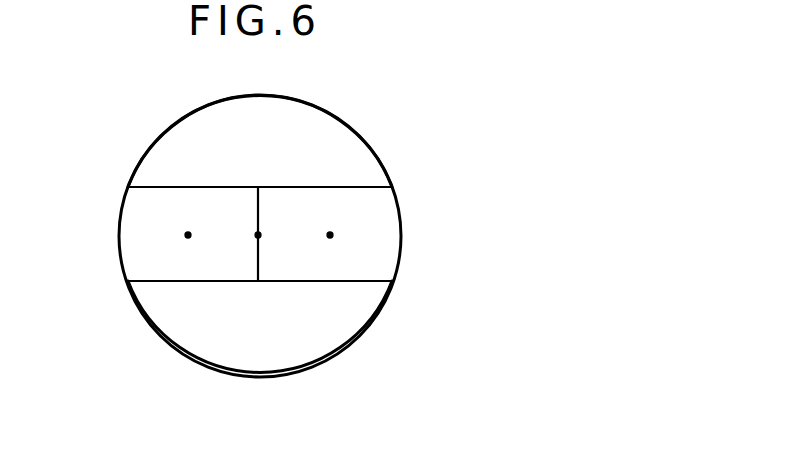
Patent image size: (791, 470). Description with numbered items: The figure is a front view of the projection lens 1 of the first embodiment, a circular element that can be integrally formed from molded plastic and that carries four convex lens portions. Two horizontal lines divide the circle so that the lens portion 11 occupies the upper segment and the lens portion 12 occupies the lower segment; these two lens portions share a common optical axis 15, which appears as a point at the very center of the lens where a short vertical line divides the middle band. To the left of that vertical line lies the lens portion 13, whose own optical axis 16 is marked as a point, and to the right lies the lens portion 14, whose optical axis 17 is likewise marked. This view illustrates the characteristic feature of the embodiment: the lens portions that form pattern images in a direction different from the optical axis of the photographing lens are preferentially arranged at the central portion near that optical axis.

The projection lens 1 is at (283, 97).
The lens portion 11 is at (150, 153).
The lens portion 12 is at (262, 366).
The lens portion 13 is at (130, 218).
The lens portion 14 is at (388, 206).
The optical axis 15 is at (258, 236).
The optical axis 16 is at (188, 236).
The optical axis 17 is at (330, 235).